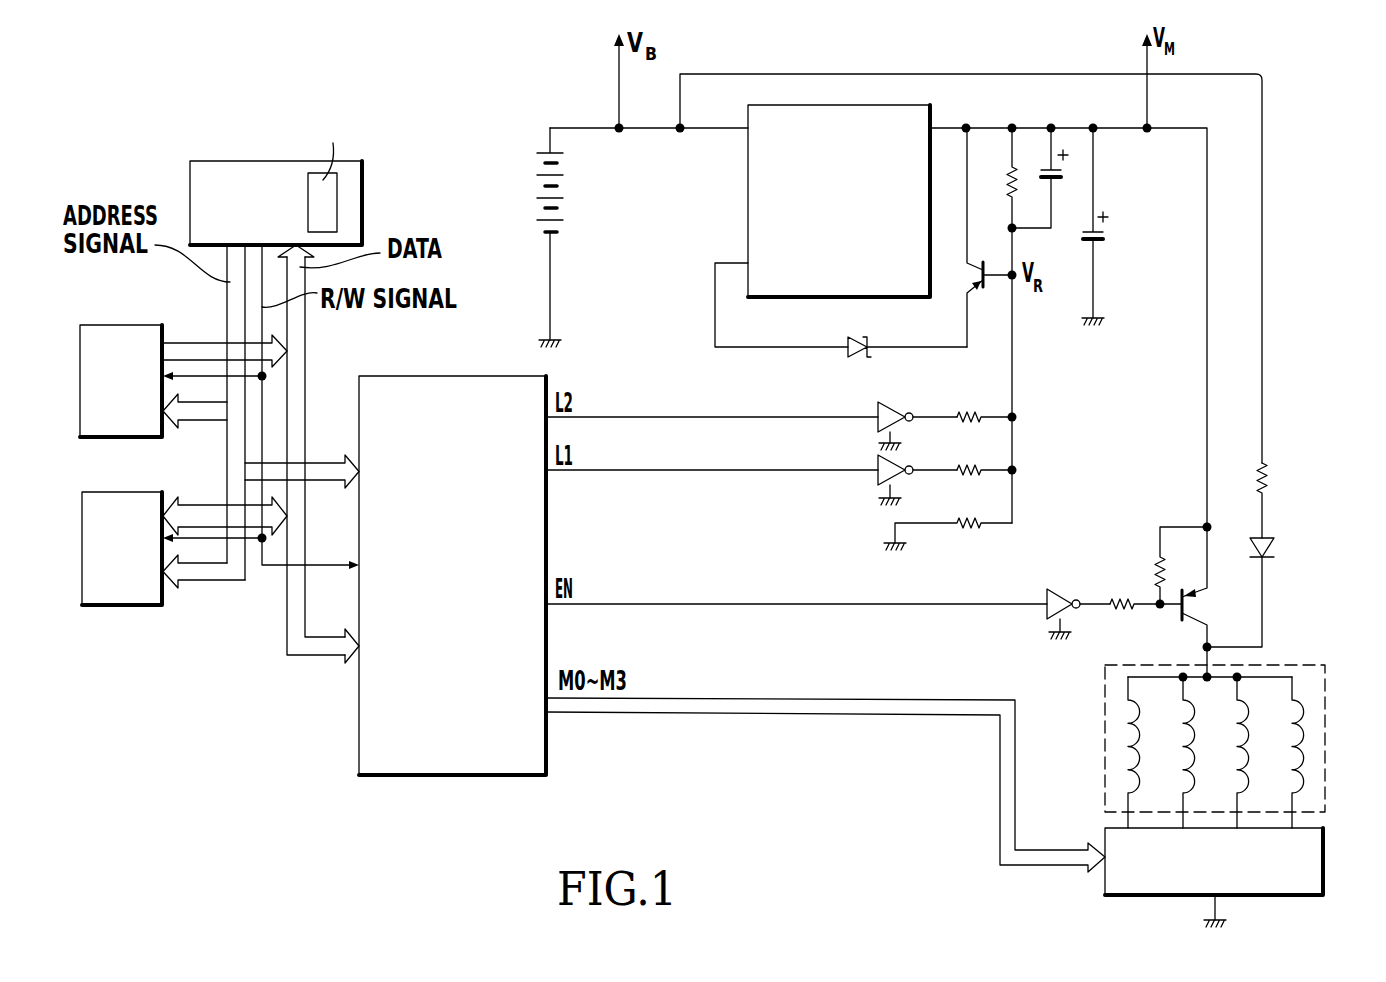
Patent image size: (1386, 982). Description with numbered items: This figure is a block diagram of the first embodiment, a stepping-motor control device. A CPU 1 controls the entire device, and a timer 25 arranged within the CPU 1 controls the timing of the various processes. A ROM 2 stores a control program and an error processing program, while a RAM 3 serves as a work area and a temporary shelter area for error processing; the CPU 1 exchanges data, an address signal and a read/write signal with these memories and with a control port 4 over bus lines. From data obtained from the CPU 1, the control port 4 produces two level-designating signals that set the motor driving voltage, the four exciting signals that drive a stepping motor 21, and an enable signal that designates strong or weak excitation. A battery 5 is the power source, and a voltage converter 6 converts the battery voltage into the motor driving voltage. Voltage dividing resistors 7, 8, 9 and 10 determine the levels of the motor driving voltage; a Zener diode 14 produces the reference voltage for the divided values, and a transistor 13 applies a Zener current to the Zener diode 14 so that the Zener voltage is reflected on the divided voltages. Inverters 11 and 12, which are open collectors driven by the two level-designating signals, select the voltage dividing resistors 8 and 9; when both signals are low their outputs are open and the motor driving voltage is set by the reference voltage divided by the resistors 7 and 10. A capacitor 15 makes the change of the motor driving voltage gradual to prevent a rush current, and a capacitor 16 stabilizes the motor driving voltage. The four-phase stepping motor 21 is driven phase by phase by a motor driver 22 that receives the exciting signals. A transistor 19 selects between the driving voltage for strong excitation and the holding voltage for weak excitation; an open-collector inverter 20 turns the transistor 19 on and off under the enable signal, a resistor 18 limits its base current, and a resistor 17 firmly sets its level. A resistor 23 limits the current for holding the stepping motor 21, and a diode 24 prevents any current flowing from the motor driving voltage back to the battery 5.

The CPU 1 is at (265, 161).
The ROM 2 is at (118, 327).
The RAM 3 is at (127, 492).
The control port 4 is at (445, 377).
The battery 5 is at (562, 210).
The voltage converter 6 is at (748, 190).
The voltage dividing resistor 7 is at (1007, 177).
The voltage dividing resistor 8 is at (973, 410).
The voltage dividing resistor 9 is at (975, 468).
The voltage dividing resistor 10 is at (975, 520).
The inverter 11 is at (888, 402).
The inverter 12 is at (878, 460).
The transistor 13 is at (975, 292).
The Zener diode 14 is at (855, 342).
The capacitor 15 is at (1062, 175).
The capacitor 16 is at (1105, 237).
The resistor 17 is at (1155, 565).
The resistor 18 is at (1122, 612).
The transistor 19 is at (1195, 608).
The inverter 20 is at (1055, 595).
The stepping motor 21 is at (1325, 752).
The motor driver 22 is at (1323, 872).
The resistor 23 is at (1272, 488).
The diode 24 is at (1278, 548).
The timer 25 is at (338, 215).